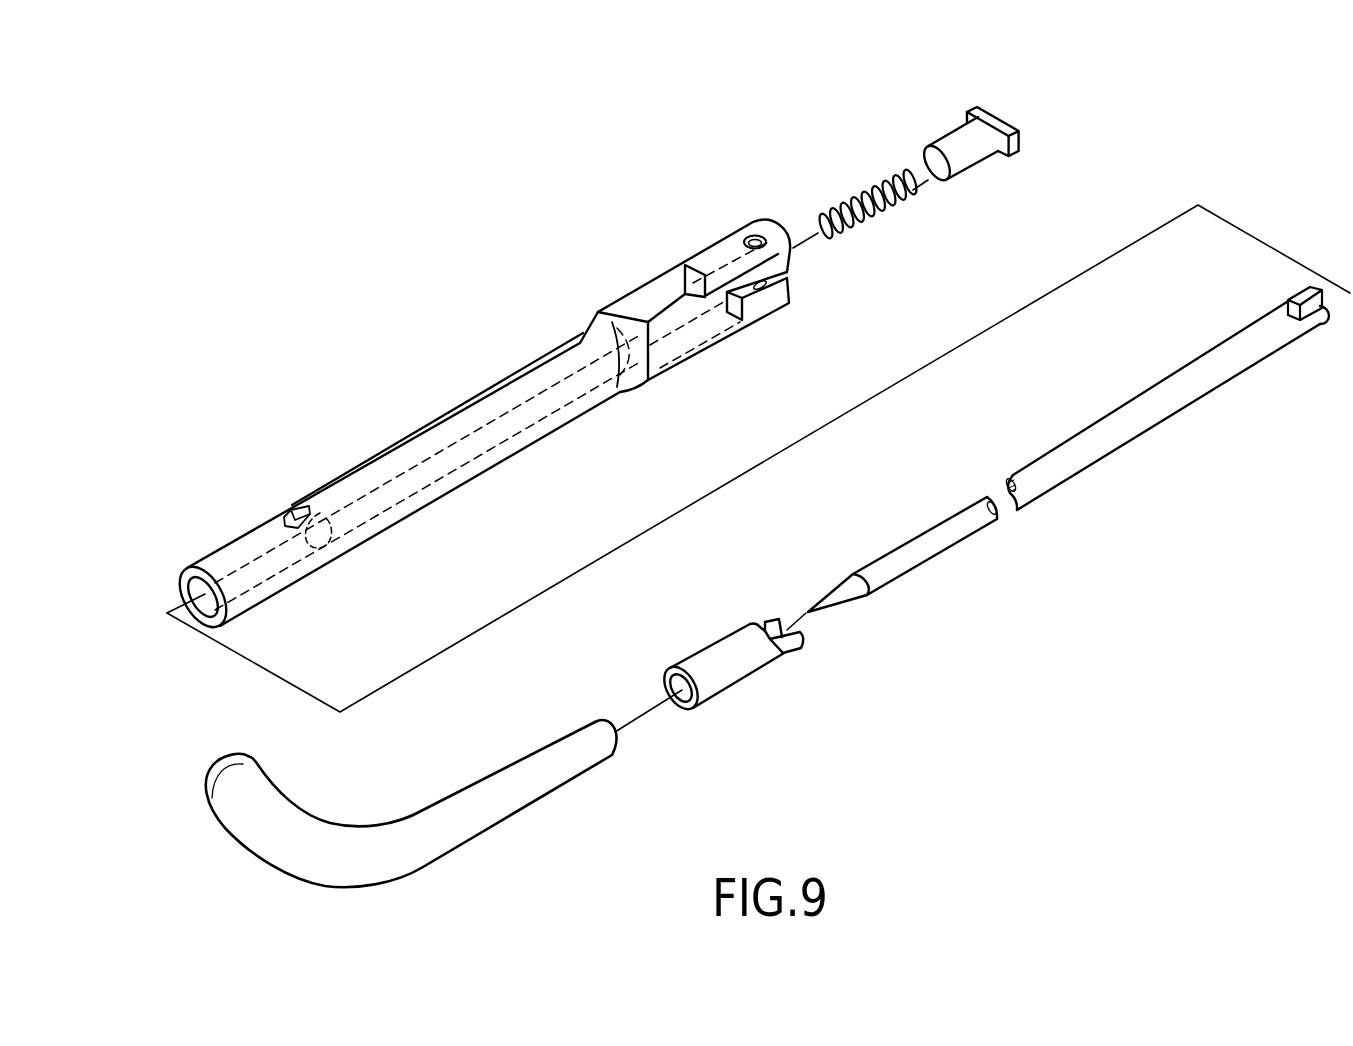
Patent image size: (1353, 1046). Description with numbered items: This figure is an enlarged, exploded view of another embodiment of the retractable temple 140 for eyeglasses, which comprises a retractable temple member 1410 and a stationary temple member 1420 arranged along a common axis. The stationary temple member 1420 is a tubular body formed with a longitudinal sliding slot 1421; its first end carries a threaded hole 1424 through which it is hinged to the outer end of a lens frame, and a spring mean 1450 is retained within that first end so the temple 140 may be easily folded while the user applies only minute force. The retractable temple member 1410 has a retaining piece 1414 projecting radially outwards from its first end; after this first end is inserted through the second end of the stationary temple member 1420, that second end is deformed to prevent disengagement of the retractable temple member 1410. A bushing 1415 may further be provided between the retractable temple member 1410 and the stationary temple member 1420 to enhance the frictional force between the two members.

The retractable temple 140 is at (1236, 139).
The retractable temple member 1410 is at (463, 913).
The retaining piece 1414 is at (1303, 294).
The bushing 1415 is at (731, 673).
The stationary temple member 1420 is at (959, 42).
The longitudinal sliding slot 1421 is at (394, 458).
The threaded hole 1424 is at (758, 235).
The spring mean 1450 is at (882, 213).